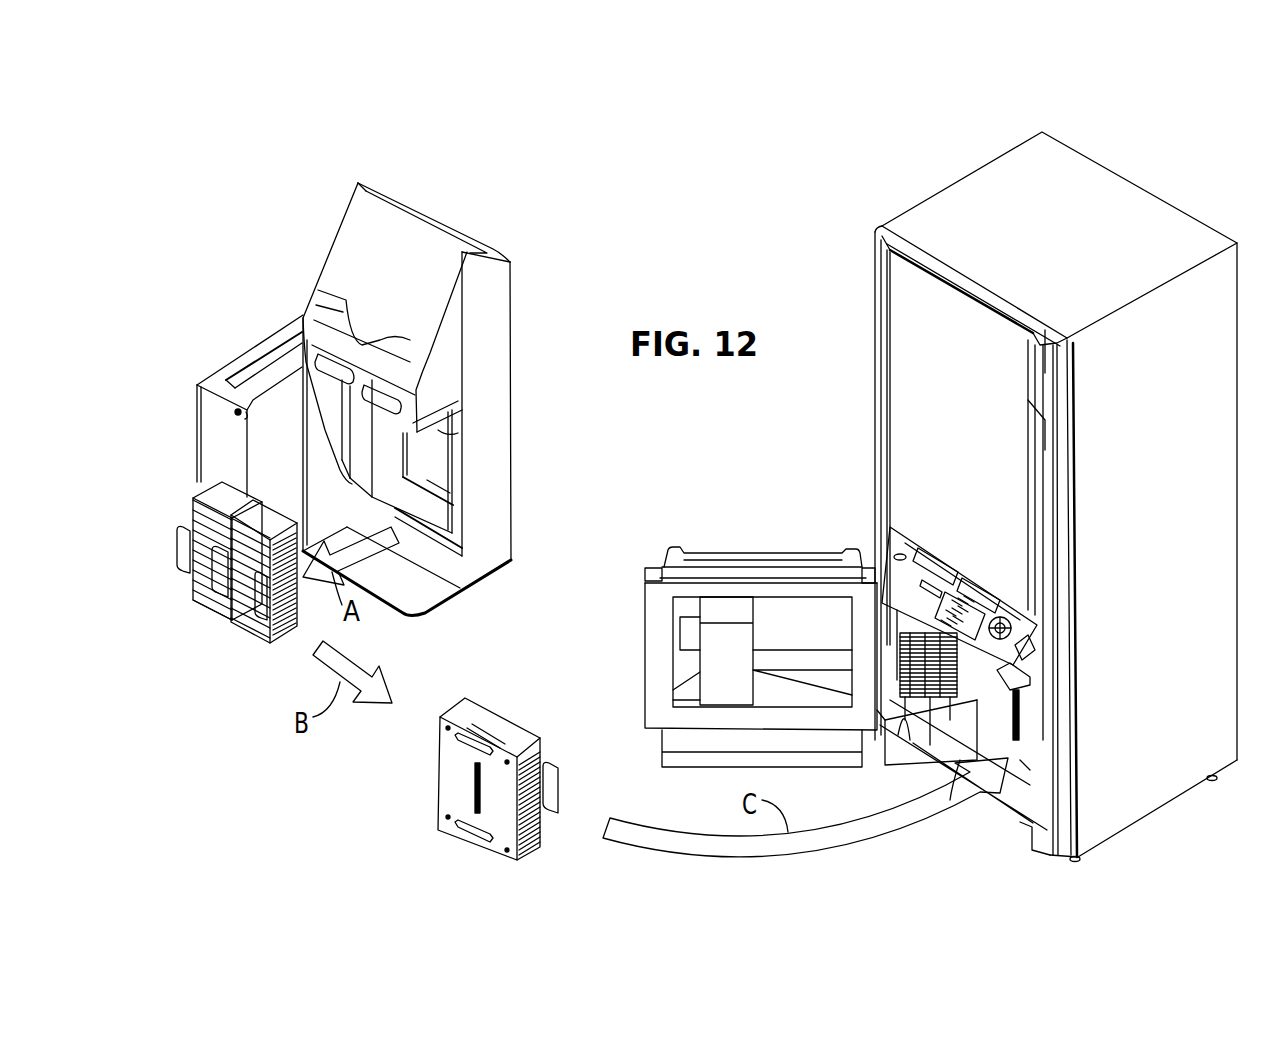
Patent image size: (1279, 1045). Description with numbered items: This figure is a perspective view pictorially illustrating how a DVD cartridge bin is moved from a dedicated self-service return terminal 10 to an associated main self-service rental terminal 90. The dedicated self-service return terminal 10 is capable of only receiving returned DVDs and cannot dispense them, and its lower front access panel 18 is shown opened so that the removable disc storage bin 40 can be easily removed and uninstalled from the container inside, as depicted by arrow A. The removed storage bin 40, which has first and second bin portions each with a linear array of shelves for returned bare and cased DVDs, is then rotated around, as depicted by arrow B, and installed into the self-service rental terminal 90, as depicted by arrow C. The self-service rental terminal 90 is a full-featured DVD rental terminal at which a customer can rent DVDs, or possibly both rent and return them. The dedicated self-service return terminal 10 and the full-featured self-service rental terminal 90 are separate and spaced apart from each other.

The dedicated self-service return terminal 10 is at (272, 199).
The lower front access panel 18 is at (215, 437).
The removable disc storage bin 40 is at (241, 616).
The self-service rental terminal 90 is at (873, 175).